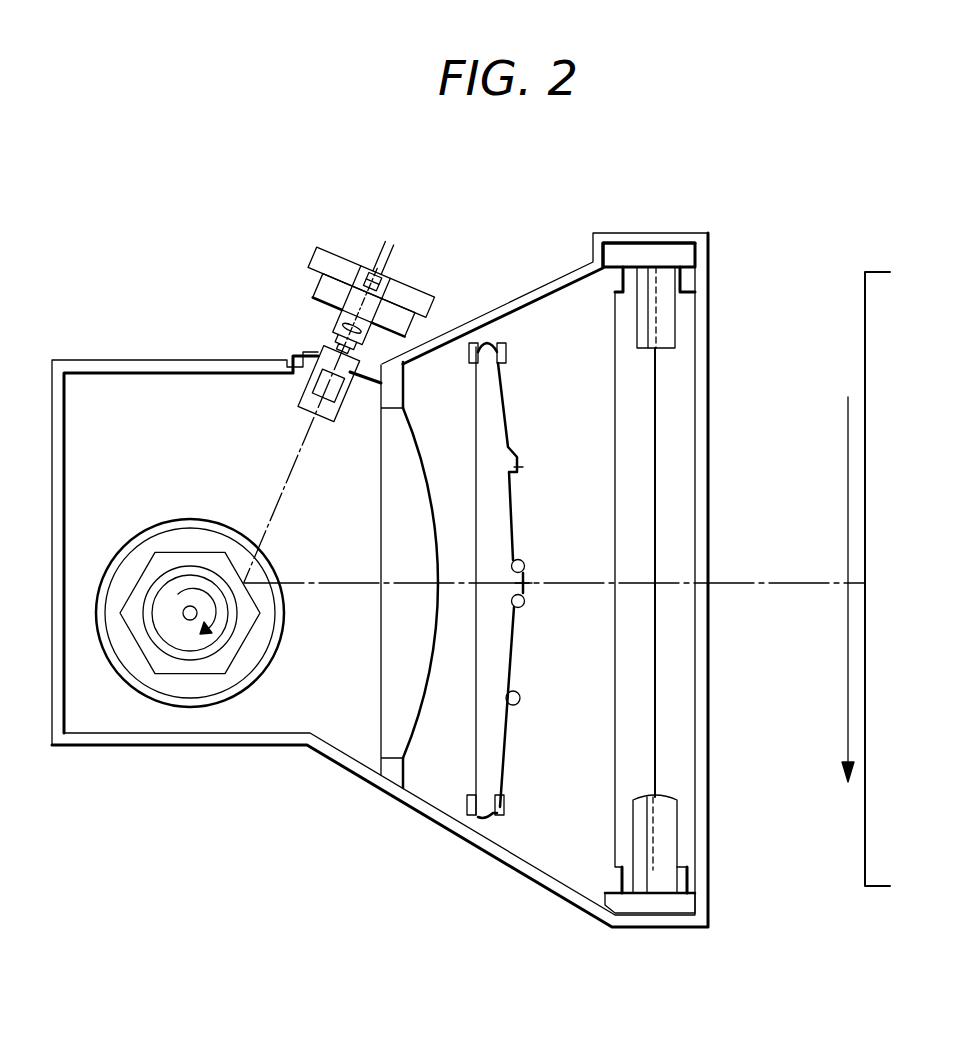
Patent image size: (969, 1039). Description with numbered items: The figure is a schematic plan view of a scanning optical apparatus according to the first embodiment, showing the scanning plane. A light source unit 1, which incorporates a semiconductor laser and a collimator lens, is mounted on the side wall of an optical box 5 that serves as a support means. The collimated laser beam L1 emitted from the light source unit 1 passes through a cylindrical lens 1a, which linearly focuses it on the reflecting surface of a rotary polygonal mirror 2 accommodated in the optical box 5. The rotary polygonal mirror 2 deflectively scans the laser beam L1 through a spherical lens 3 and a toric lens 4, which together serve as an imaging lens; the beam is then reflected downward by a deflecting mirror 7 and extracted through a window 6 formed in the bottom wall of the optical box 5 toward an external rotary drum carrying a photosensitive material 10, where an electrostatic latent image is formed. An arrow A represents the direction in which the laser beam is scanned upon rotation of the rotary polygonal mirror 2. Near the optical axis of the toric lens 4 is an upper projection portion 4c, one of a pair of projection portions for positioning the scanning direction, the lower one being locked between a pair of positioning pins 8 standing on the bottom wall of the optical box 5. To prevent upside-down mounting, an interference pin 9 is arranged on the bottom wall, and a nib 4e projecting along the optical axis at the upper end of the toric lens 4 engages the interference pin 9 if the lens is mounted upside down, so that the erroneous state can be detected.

The light source unit 1 is at (358, 247).
The cylindrical lens 1a is at (318, 382).
The rotary polygonal mirror 2 is at (238, 652).
The spherical lens 3 is at (400, 702).
The toric lens 4 is at (511, 742).
The upper projection portion 4c is at (533, 580).
The nib (projection) 4e is at (520, 467).
The optical box 5 is at (137, 360).
The window 6 is at (620, 880).
The deflecting mirror 7 is at (660, 268).
The positioning pins 8 is at (524, 560).
The interference pin 9 is at (521, 698).
The photosensitive material 10 is at (858, 873).
The laser beam L1 is at (282, 462).
The arrow A is at (847, 575).